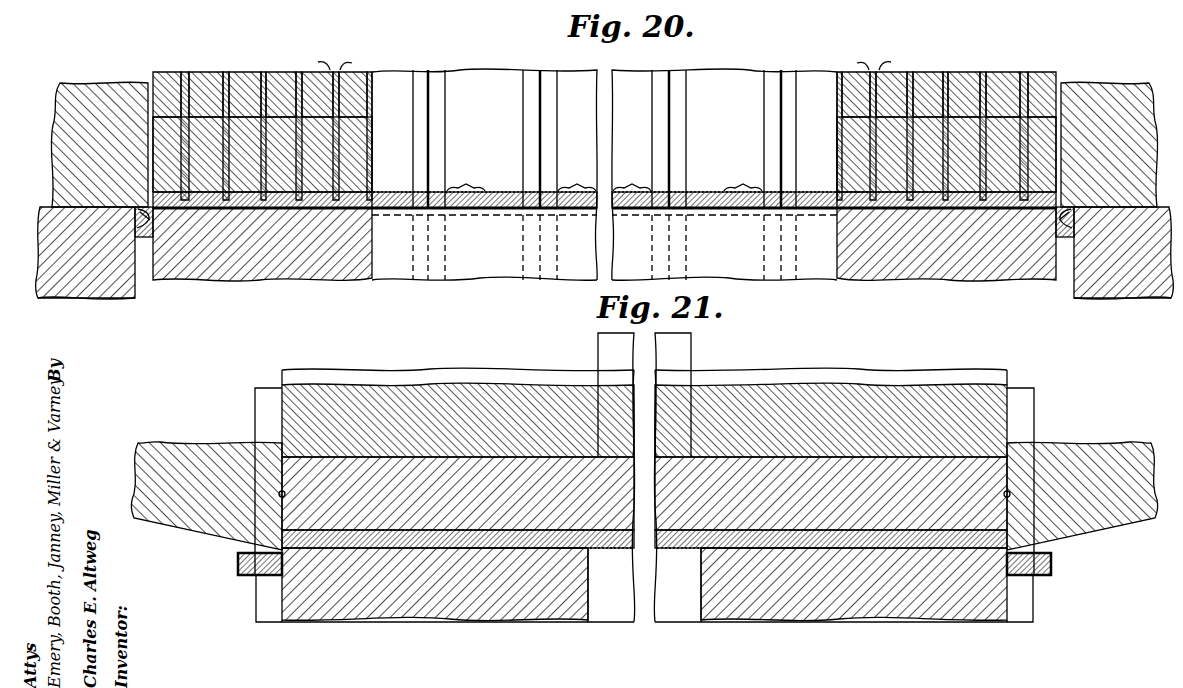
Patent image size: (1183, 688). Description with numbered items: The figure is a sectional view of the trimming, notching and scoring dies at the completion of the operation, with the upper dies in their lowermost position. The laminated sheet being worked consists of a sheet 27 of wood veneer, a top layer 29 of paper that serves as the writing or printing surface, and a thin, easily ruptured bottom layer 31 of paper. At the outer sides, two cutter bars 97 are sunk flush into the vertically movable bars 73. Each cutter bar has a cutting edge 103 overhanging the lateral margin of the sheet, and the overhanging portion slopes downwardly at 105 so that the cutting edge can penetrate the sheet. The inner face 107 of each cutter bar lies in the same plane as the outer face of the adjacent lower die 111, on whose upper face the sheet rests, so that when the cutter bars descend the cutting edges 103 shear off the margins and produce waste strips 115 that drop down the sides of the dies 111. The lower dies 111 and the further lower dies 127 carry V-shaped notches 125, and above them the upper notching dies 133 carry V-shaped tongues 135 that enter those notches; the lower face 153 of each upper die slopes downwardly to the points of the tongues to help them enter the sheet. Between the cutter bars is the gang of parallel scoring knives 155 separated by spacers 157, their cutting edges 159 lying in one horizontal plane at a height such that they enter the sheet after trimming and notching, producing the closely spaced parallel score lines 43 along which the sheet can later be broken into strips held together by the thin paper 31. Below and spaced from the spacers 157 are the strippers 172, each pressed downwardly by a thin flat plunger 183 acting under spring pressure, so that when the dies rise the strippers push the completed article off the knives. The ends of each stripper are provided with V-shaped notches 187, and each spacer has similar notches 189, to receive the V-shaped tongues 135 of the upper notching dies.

In FIG. 20, the cutter bar 97 is at (92, 88).
In FIG. 20, the cutting edge 103 is at (134, 237).
In FIG. 20, the vertically movable bar 73 is at (82, 303).
In FIG. 20, the waste strip 115 is at (152, 235).
In FIG. 20, the sloping portion 105 is at (135, 222).
In FIG. 20, the inner face 107 is at (150, 144).
In FIG. 20, the stripper 172 is at (355, 150).
In FIG. 21, the stripper 172 is at (421, 478).
In FIG. 20, the spacer 157 is at (205, 80).
In FIG. 21, the spacer 157 is at (452, 392).
In FIG. 20, the scoring knife 155 is at (283, 82).
In FIG. 21, the scoring knife 155 is at (538, 378).
In FIG. 20, the plunger 183 is at (336, 80).
In FIG. 21, the plunger 183 is at (605, 346).
In FIG. 20, the top layer of paper 29 is at (243, 191).
In FIG. 21, the top layer of paper 29 is at (508, 531).
In FIG. 20, the sheet of wood veneer 27 is at (236, 212).
In FIG. 21, the sheet of wood veneer 27 is at (423, 548).
In FIG. 20, the bottom layer of paper 31 is at (200, 210).
In FIG. 21, the bottom layer of paper 31 is at (546, 550).
In FIG. 20, the cutting edge of knife 159 is at (270, 209).
In FIG. 20, the lower die 111 is at (280, 265).
In FIG. 20, the upper notching die 133 is at (486, 72).
In FIG. 21, the upper notching die 133 is at (183, 522).
In FIG. 20, the lower die 127 is at (492, 270).
In FIG. 21, the lower die 127 is at (461, 612).
In FIG. 20, the V-shaped tongue 135 is at (430, 122).
In FIG. 21, the V-shaped tongue 135 is at (270, 597).
In FIG. 20, the V-shaped notch 125 is at (522, 250).
In FIG. 21, the V-shaped notch 125 is at (272, 602).
In FIG. 20, the score line 43 is at (604, 177).
In FIG. 21, the V-shaped notch in spacer 189 is at (268, 423).
In FIG. 21, the V-shaped notch in stripper 187 is at (286, 495).
In FIG. 21, the lower face 153 is at (216, 550).